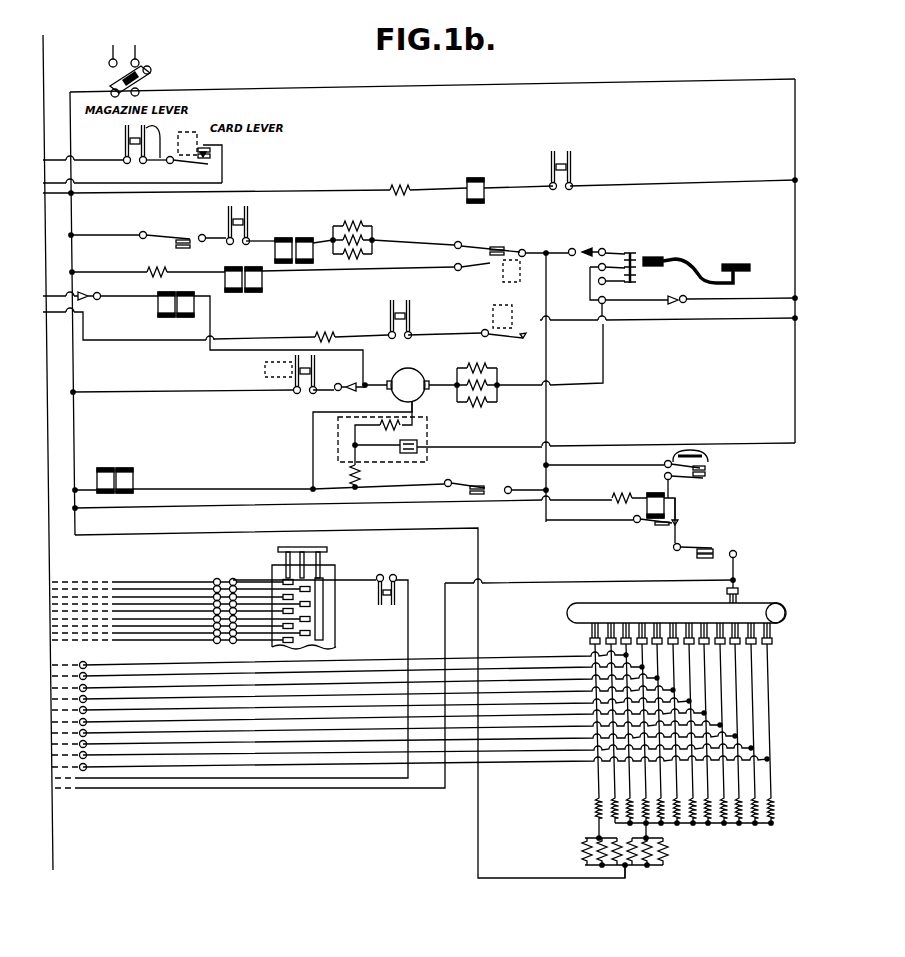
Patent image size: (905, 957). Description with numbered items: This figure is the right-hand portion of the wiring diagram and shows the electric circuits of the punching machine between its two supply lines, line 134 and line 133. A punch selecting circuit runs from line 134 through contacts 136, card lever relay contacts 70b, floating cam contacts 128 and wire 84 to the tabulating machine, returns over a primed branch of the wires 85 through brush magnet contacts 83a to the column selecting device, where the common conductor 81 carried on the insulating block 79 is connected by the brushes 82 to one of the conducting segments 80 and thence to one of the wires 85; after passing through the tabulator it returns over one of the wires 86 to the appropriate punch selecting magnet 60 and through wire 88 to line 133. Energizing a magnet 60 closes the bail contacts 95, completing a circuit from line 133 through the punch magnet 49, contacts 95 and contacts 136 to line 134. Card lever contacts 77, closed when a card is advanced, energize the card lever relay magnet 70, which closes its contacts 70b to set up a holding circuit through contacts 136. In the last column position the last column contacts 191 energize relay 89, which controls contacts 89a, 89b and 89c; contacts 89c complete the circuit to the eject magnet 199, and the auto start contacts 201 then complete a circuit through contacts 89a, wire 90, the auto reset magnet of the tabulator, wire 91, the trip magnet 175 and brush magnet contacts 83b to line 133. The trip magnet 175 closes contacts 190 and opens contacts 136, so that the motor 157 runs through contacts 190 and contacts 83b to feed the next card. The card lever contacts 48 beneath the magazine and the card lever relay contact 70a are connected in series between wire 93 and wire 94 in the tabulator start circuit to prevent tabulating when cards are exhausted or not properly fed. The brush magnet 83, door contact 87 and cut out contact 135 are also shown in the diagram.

The line 134 is at (552, 86).
The wire 94 is at (47, 160).
The card lever contacts 48 is at (124, 144).
The card lever relay magnet 70 is at (204, 132).
The card lever relay contact 70a is at (224, 162).
The card lever relay contacts 70b is at (660, 531).
The wire 93 is at (139, 190).
The relay 89 is at (486, 193).
The last column contacts 191 is at (572, 168).
The door contact 87 is at (188, 237).
The cut out contact 135 is at (250, 224).
The brush magnet 83 is at (305, 262).
The contacts 89b is at (502, 250).
The contacts 89c is at (455, 262).
The contacts 136 is at (633, 253).
The contacts 190 is at (638, 272).
The auto start contacts 201 is at (399, 314).
The wire 90 is at (173, 344).
The contacts 89a is at (522, 340).
The wire 91 is at (115, 296).
The trip magnet 175 is at (197, 306).
The eject magnet 199 is at (255, 285).
The line 133 is at (73, 374).
The brush magnet contacts 83b is at (316, 396).
The motor 157 is at (412, 383).
The card lever contacts 77 is at (706, 462).
The bail contacts 95 is at (486, 495).
The punch magnet 49 is at (130, 477).
The floating cam contacts 128 is at (700, 557).
The wire 84 is at (530, 585).
The wire 88 is at (488, 832).
The brush magnet contacts 83a is at (399, 590).
The insulating block 79 is at (337, 573).
The brushes 82 is at (278, 548).
The common conductor 81 is at (322, 608).
The wires 85 is at (187, 598).
The conducting segments 80 is at (302, 622).
The wires 86 is at (290, 742).
The punch selecting magnet 60 is at (640, 801).